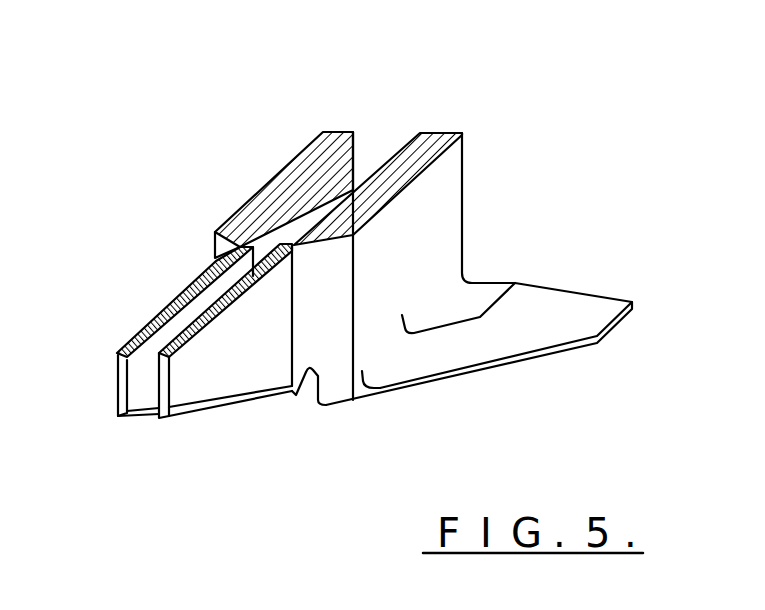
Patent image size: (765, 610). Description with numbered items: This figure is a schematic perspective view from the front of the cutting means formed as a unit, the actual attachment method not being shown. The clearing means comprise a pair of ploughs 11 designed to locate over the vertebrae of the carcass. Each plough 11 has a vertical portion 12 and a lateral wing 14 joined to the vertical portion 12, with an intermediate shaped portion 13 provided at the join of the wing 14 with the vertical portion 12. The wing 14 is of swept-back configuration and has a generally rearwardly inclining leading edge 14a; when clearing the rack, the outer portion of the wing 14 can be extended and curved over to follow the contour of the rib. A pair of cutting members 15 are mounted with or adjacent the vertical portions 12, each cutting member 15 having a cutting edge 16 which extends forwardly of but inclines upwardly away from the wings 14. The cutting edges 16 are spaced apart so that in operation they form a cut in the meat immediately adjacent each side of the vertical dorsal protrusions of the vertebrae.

The plough 11 is at (443, 132).
The vertical portion 12 is at (443, 212).
The intermediate shaped portion 13 is at (308, 378).
The lateral wing 14 is at (535, 310).
The leading edge 14a is at (497, 367).
The cutting member 15 is at (220, 327).
The cutting edge 16 is at (187, 417).